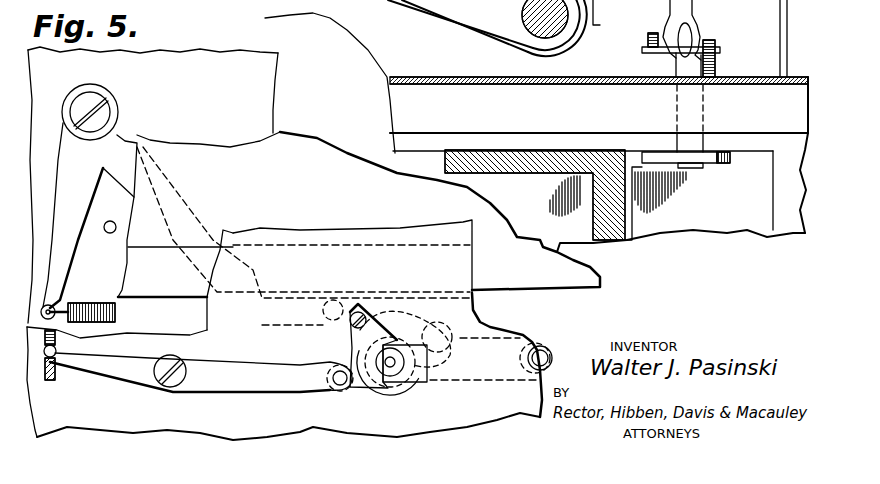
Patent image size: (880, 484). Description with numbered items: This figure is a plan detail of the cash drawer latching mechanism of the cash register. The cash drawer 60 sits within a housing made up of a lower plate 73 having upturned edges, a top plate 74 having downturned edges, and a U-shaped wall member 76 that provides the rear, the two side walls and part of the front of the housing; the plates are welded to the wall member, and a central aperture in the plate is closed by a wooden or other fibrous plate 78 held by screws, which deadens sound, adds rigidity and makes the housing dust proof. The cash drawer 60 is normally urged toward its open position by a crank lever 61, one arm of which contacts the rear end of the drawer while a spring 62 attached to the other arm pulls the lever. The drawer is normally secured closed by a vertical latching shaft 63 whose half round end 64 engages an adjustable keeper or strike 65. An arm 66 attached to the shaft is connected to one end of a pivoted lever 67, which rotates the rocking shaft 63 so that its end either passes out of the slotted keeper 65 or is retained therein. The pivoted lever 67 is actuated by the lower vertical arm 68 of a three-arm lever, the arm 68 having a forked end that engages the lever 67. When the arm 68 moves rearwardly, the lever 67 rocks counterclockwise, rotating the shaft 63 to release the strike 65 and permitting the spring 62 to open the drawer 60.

The cash drawer 60 is at (230, 147).
The crank lever 61 is at (120, 142).
The spring 62 is at (117, 312).
The vertical latching shaft 63 is at (675, 108).
The half round end 64 is at (693, 165).
The adjustable keeper 65 is at (723, 157).
The arm 66 is at (643, 58).
The pivoted lever 67 is at (727, 37).
The lower vertical arm 68 is at (58, 365).
The lower plate 73 is at (230, 58).
The top plate 74 is at (447, 82).
The U-shaped wall member 76 is at (793, 217).
The fibrous plate 78 is at (507, 97).